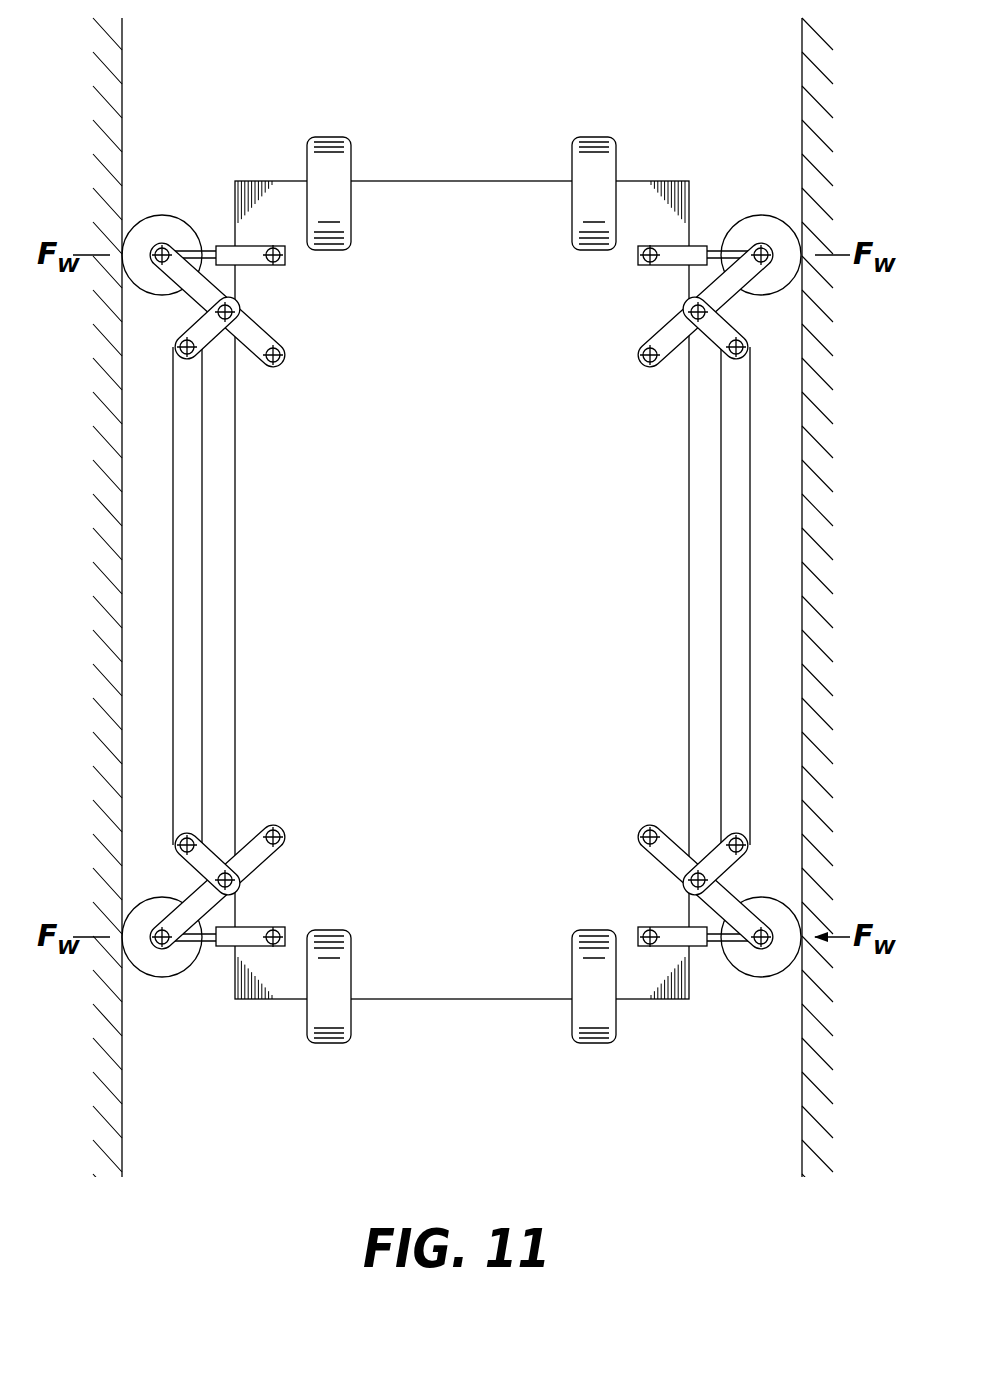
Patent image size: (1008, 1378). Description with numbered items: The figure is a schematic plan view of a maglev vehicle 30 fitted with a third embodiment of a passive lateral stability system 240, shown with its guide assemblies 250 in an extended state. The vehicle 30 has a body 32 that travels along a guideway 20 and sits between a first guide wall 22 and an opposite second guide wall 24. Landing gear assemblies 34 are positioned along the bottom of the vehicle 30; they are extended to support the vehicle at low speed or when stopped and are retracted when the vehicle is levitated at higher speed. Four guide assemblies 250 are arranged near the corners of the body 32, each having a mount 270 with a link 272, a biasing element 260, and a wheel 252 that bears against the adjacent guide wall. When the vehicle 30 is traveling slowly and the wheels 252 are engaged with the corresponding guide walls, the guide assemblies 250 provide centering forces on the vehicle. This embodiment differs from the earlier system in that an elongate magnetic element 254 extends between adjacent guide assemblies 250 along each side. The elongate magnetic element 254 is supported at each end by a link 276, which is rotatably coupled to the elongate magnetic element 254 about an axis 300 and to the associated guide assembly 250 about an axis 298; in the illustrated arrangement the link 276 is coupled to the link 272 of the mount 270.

The guideway 20 is at (463, 612).
The first guide wall 22 is at (122, 59).
The second guide wall 24 is at (802, 69).
The vehicle 30 is at (462, 544).
The body 32 is at (462, 180).
The landing gear assemblies 34 is at (329, 137).
The passive lateral stability system 240 is at (729, 124).
The guide assemblies 250 is at (172, 189).
The wheels 252 is at (159, 214).
The elongate magnetic element 254 is at (187, 592).
The biasing element 260 is at (257, 246).
The mount 270 is at (242, 368).
The link 272 is at (274, 335).
The link 276 is at (201, 327).
The axis 298 is at (236, 303).
The axis 300 is at (180, 357).